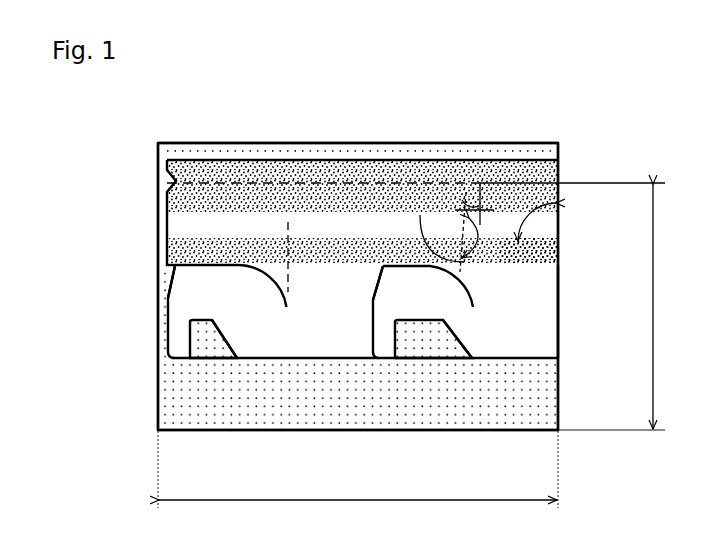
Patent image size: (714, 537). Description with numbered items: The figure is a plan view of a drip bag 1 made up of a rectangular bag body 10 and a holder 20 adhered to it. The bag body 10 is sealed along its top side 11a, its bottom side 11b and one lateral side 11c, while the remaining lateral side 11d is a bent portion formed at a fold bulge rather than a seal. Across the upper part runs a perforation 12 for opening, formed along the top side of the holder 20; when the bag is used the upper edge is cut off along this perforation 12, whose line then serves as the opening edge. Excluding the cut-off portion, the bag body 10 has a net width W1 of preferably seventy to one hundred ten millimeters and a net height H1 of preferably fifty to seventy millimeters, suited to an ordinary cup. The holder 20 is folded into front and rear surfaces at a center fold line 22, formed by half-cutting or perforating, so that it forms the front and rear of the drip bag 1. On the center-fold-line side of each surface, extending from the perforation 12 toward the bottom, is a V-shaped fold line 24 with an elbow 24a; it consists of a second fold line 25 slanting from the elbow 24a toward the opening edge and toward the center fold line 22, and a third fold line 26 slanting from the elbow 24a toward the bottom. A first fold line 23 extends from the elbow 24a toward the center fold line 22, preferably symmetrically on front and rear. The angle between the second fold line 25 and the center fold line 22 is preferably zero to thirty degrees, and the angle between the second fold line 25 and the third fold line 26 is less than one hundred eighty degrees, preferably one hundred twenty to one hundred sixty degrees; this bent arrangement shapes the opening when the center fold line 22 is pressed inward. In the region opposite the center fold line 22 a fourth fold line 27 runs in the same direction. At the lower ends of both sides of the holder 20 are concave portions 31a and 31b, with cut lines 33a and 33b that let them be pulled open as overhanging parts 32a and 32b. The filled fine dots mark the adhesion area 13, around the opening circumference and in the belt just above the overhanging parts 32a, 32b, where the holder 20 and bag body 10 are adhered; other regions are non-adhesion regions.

The drip bag 1 is at (110, 157).
The bag body 10 is at (168, 400).
The top side 11a is at (333, 143).
The bottom side 11b is at (333, 431).
The lateral side 11c is at (158, 364).
The another lateral side 11d is at (559, 382).
The perforation for opening 12 is at (247, 185).
The adhesion area 13 is at (188, 250).
The holder 20 is at (172, 215).
The center fold line 22 is at (559, 297).
The first fold line 23 is at (543, 241).
The V-shaped fold line 24 is at (451, 169).
The elbow 24a is at (454, 235).
The second fold line 25 is at (466, 192).
The third fold line 26 is at (420, 215).
The fourth fold line 27 is at (289, 217).
The concave portion 31a is at (432, 330).
The concave portion 31b is at (198, 330).
The overhanging part 32a is at (405, 307).
The overhanging part 32b is at (240, 300).
The cut line 33a is at (395, 265).
The cut line 33b is at (213, 263).
The height H1 is at (622, 307).
The width W1 is at (358, 479).